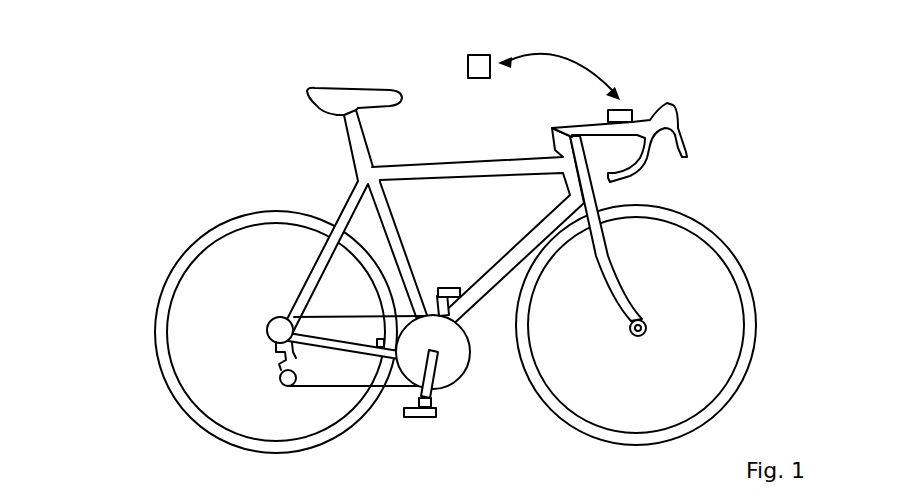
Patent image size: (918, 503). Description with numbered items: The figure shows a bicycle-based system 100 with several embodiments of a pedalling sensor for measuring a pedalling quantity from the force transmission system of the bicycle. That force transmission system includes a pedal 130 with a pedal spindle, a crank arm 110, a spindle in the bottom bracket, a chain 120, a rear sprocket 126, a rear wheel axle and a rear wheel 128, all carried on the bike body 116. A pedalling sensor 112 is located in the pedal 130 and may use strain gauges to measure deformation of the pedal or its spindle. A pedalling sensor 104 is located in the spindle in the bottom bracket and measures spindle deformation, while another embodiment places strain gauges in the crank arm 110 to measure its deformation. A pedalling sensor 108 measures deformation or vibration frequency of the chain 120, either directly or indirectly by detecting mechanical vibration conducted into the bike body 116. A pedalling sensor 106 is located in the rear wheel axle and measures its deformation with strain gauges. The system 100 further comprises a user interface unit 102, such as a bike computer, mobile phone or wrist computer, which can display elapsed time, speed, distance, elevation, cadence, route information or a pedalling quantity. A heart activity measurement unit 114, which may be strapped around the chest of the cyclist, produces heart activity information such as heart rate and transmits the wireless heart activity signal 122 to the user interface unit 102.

The system 100 is at (190, 87).
The user interface unit 102 is at (650, 110).
The pedalling sensor 104 is at (433, 338).
The pedalling sensor 106 is at (254, 321).
The pedalling sensor 108 is at (378, 351).
The crank arm 110 is at (413, 384).
The pedalling sensor 112 is at (472, 358).
The heart activity measurement unit 114 is at (468, 70).
The bike body 116 is at (394, 222).
The chain 120 is at (325, 386).
The wireless heart activity signal 122 is at (573, 65).
The rear sprocket 126 is at (277, 317).
The rear wheel 128 is at (216, 226).
The pedal 130 is at (421, 428).